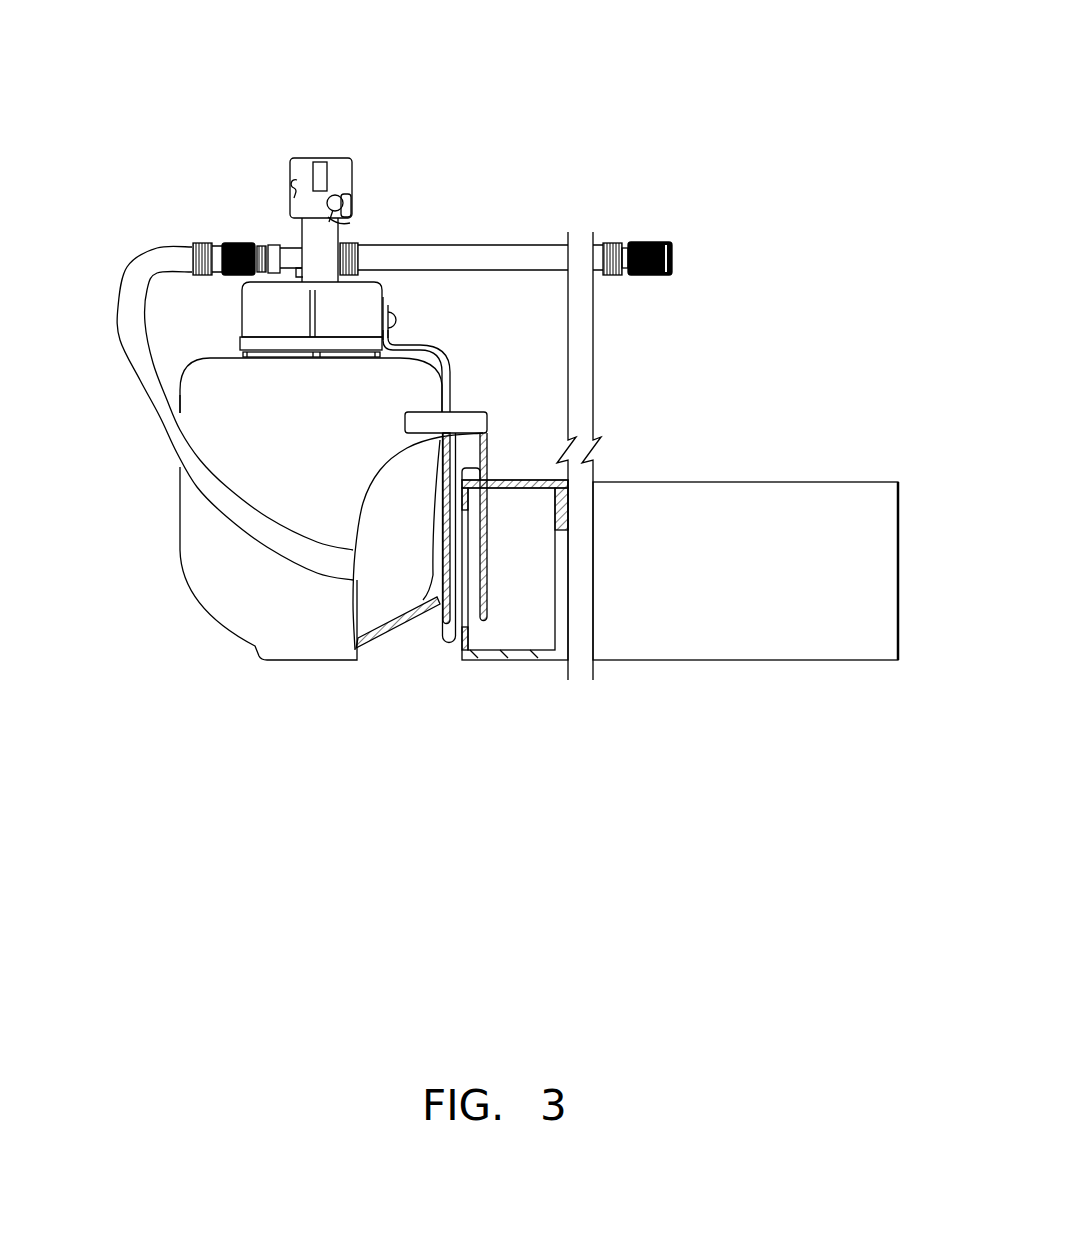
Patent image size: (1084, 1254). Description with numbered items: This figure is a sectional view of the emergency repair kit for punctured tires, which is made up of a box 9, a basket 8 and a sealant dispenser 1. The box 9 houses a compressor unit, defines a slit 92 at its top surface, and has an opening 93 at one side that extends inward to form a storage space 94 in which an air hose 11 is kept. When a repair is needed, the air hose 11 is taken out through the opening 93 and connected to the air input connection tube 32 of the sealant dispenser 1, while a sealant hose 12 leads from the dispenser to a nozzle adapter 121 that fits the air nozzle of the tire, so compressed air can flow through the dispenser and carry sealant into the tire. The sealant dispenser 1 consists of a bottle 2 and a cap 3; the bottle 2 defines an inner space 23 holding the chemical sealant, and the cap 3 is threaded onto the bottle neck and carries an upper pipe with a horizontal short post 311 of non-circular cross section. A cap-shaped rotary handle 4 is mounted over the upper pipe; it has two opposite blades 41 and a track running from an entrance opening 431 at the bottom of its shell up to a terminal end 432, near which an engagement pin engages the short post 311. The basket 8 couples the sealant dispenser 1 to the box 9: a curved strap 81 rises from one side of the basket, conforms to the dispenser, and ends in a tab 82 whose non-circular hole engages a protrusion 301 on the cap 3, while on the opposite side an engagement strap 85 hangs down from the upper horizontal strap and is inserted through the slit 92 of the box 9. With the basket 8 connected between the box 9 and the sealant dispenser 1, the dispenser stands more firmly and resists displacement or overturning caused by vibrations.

The sealant dispenser 1 is at (178, 120).
The bottle 2 is at (237, 603).
The cap 3 is at (257, 303).
The rotary handle 4 is at (300, 158).
The basket 8 is at (460, 423).
The box 9 is at (745, 507).
The air hose 11 is at (172, 420).
The sealant hose 12 is at (480, 250).
The inner space 23 is at (372, 603).
The air input connection tube 32 is at (268, 243).
The blades 41 is at (321, 160).
The curved strap 81 is at (430, 347).
The tab 82 is at (383, 300).
The engagement strap 85 is at (484, 614).
The slit 92 is at (488, 482).
The opening 93 is at (465, 587).
The storage space 94 is at (517, 600).
The nozzle adapter 121 is at (655, 243).
The protrusion 301 is at (395, 320).
The short post 311 is at (338, 196).
The entrance opening 431 is at (337, 218).
The terminal end 432 is at (292, 184).